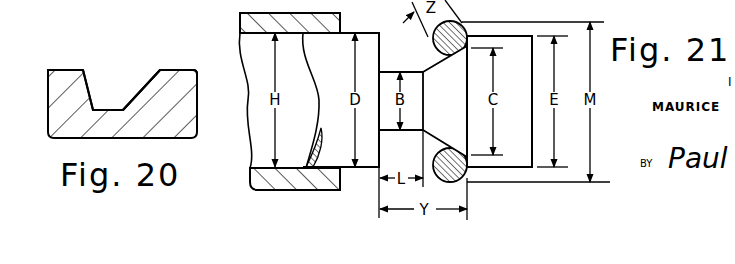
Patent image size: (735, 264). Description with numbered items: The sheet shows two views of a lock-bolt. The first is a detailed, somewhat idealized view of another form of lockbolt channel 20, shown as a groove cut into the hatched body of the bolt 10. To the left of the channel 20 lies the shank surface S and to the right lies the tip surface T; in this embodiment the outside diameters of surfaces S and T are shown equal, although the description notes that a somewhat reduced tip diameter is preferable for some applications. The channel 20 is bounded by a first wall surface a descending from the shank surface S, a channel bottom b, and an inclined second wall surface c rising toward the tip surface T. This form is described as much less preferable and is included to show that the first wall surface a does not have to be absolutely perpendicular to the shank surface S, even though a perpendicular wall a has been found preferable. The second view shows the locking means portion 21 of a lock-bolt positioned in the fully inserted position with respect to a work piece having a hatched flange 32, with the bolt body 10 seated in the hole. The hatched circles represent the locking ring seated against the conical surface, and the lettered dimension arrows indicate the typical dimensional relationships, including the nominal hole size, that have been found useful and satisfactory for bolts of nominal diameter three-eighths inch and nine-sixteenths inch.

In FIG. 20, the tool holder body / block 10 is at (193, 124).
In FIG. 21, the tool holder body / block 10 is at (368, 168).
In FIG. 20, the groove 20 is at (154, 69).
In FIG. 21, the conical seat with O-rings 21 is at (437, 63).
In FIG. 21, the mounting flange 32 is at (255, 190).
In FIG. 20, the shank surface S is at (59, 70).
In FIG. 20, the tip surface T is at (188, 69).
In FIG. 20, the first wall surface a is at (90, 88).
In FIG. 20, the channel bottom surface b is at (103, 110).
In FIG. 20, the second wall surface c is at (139, 92).